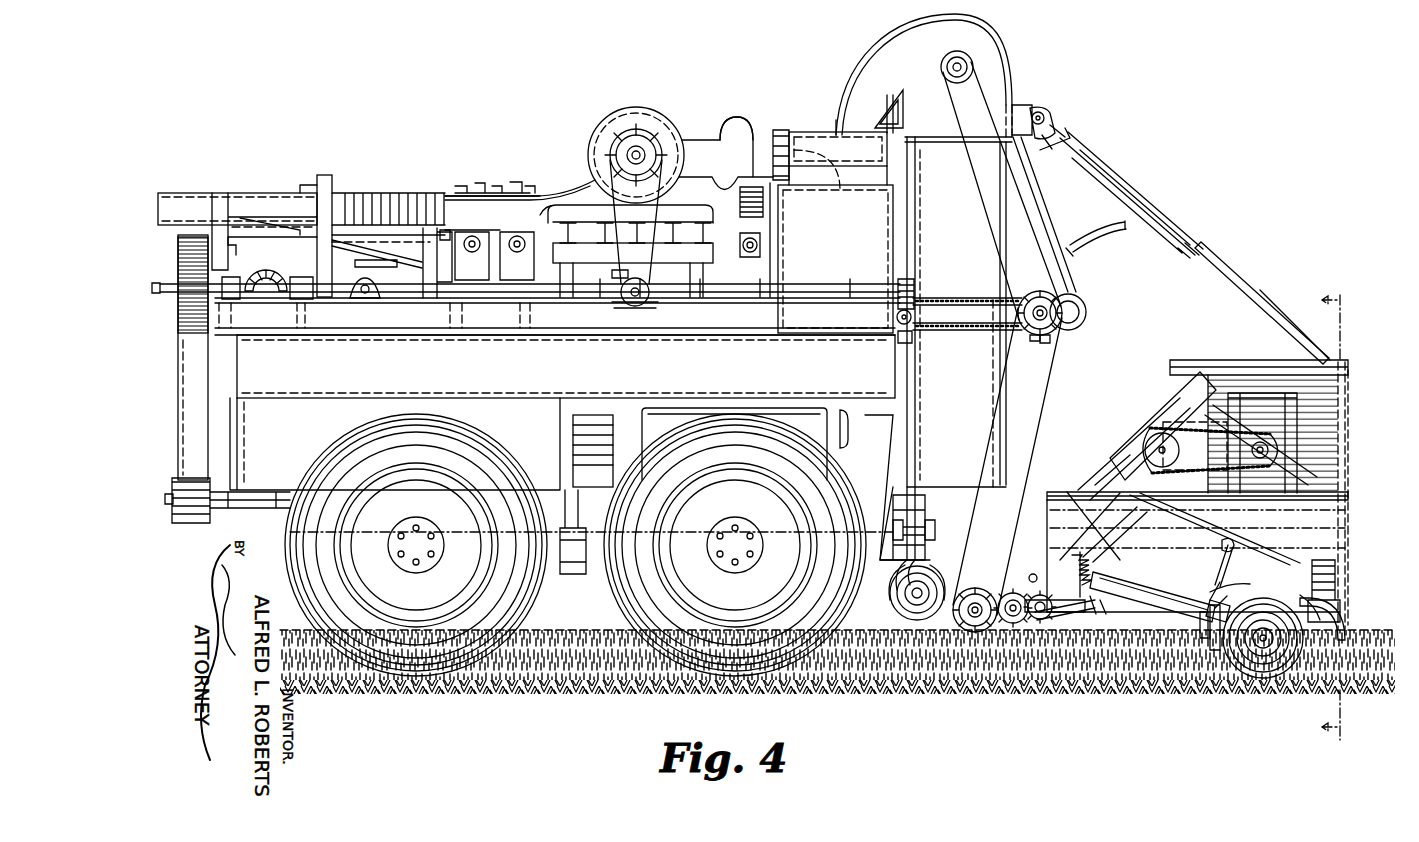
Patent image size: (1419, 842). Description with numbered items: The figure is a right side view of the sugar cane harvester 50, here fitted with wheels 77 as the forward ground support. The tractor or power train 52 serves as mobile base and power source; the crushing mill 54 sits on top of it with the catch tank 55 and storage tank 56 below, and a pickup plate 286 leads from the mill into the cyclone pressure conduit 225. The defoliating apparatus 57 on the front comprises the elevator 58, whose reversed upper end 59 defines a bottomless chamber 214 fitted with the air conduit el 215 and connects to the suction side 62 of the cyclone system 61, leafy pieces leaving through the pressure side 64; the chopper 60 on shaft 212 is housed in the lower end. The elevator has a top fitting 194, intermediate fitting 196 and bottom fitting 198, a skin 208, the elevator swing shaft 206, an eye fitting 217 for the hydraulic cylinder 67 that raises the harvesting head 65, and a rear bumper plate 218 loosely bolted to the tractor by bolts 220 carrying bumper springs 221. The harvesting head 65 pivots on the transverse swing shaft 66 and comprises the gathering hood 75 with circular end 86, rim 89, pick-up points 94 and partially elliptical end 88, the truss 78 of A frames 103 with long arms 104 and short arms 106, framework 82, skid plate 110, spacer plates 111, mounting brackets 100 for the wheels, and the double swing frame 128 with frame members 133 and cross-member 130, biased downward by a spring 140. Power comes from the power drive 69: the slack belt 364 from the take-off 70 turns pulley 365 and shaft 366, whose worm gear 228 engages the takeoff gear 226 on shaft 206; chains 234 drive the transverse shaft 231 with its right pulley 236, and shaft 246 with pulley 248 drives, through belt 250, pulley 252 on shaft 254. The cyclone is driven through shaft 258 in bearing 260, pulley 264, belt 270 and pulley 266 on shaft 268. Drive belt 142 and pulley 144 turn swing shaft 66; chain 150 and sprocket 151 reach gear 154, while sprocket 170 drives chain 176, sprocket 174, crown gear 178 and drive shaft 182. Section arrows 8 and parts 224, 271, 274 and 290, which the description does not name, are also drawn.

The section line 8- 8 is at (1320, 515).
The sugar cane harvester 50 is at (317, 178).
The engine driven tractor or power train 52 is at (566, 576).
The crushing or grinding mill 54 is at (476, 186).
The catch juice tank 55 is at (372, 335).
The storage juice tank 56 is at (513, 387).
The defoliating apparatus 57 is at (800, 130).
The elevator 58 is at (1012, 60).
The reversed upper end 59 is at (876, 62).
The chopper or hog 60 is at (917, 612).
The cyclone system 61 is at (648, 128).
The suction side 62 is at (700, 140).
The pressure side 64 is at (560, 182).
The harvesting head 65 is at (1270, 290).
The horizontally-transverse swing shaft 66 is at (977, 626).
The hydraulic cylinder 67 is at (1165, 214).
The power drive 69 is at (178, 318).
The power take-off 70 is at (214, 522).
The gathering hood 75 is at (1347, 362).
The wheels 77 is at (1242, 668).
The truss 78 is at (1100, 480).
The forwardly extending framework 82 is at (1192, 360).
The circular end 86 is at (1350, 444).
The partially elliptical end 88 is at (1174, 401).
The rim 89 is at (1342, 577).
The pick-up points 94 is at (1342, 624).
The mounting brackets 100 is at (1300, 514).
The A frames 103 is at (1088, 428).
The long arm 104 is at (1096, 462).
The short arm 106 is at (1092, 612).
The skid plate 110 is at (1170, 600).
The spacer plates 111 is at (1130, 594).
The double swing frame 128 is at (1115, 542).
The cross-member 130 is at (1193, 552).
The double frame members 133 is at (1120, 522).
The springs 140 is at (1060, 574).
The drive belt 142 is at (1040, 399).
The pulley 144 is at (976, 588).
The chain 150 is at (1015, 625).
The sprocket 151 is at (1046, 622).
The gear 154 is at (1035, 621).
The sprockets 170 is at (1158, 446).
The sprocket 174 is at (1264, 468).
The chain 176 is at (1212, 478).
The crown gear 178 is at (1276, 444).
The downwardly extending drive shaft 182 is at (1225, 582).
The top fitting 194 is at (1000, 45).
The intermediate fitting 196 is at (970, 310).
The bottom fitting 198 is at (965, 455).
The elevator swing shaft 206 is at (918, 324).
The skin or covering 208 is at (918, 216).
The shaft 212 is at (905, 599).
The bottomless chamber 214 is at (840, 135).
The air conduit el 215 is at (778, 132).
The eye fitting 217 is at (1034, 106).
The transverse rear bumper plate 218 is at (905, 530).
The bolts 220 is at (926, 520).
The bumper springs 221 is at (897, 480).
The air intake 224 is at (730, 117).
The cyclone pressure conduit 225 is at (188, 193).
The takeoff gear 226 is at (918, 337).
The worm gear 228 is at (914, 282).
The transverse shaft 231 is at (1058, 334).
The chains 234 is at (968, 393).
The right pulley 236 is at (1041, 347).
The shaft 246 is at (1065, 322).
The pulley 248 is at (1075, 296).
The belt 250 is at (1040, 244).
The pulley 252 is at (952, 97).
The shaft 254 is at (954, 58).
The transverse shaft 258 is at (635, 306).
The bearing 260 is at (612, 304).
The pulley 264 is at (612, 275).
The pulley 266 is at (614, 172).
The shaft 268 is at (634, 150).
The belt 270 is at (605, 216).
The duct elbow 271 is at (865, 187).
The drive shaft 274 is at (355, 284).
The pickup plate 286 is at (372, 251).
The chassis cross member 290 is at (440, 328).
The endless slack belt 364 is at (178, 427).
The pulley 365 is at (178, 252).
The shaft 366 is at (812, 285).